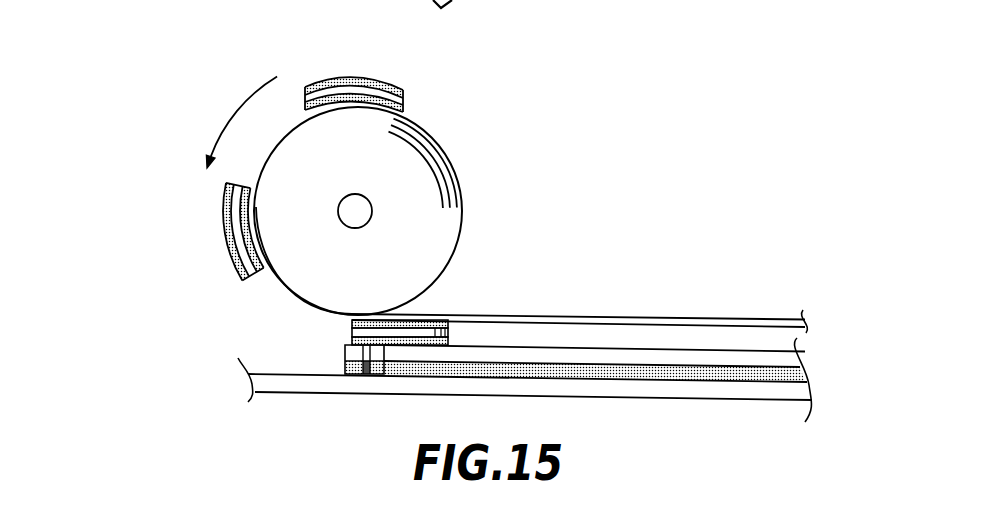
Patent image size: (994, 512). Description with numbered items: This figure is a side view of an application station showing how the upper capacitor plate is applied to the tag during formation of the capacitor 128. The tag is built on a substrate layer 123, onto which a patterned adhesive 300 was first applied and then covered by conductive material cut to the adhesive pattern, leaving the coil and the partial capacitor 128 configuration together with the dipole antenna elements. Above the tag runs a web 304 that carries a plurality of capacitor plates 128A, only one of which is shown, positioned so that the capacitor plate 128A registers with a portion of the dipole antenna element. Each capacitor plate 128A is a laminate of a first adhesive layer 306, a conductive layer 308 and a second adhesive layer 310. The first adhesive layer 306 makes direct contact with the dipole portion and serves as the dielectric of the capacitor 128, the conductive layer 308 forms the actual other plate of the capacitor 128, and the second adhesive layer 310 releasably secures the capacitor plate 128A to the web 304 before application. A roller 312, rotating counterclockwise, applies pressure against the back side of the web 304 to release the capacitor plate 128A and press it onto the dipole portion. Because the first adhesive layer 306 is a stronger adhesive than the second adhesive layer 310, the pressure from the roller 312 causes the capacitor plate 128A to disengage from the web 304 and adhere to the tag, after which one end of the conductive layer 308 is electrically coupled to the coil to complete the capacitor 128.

The substrate layer 123 is at (745, 392).
The capacitor 128 is at (199, 235).
The capacitor plate 128A is at (322, 68).
The patterned adhesive 300 is at (670, 377).
The web 304 is at (668, 317).
The first adhesive layer 306 is at (378, 82).
The conductive layer 308 is at (403, 100).
The second adhesive layer 310 is at (403, 110).
The roller 312 is at (437, 243).